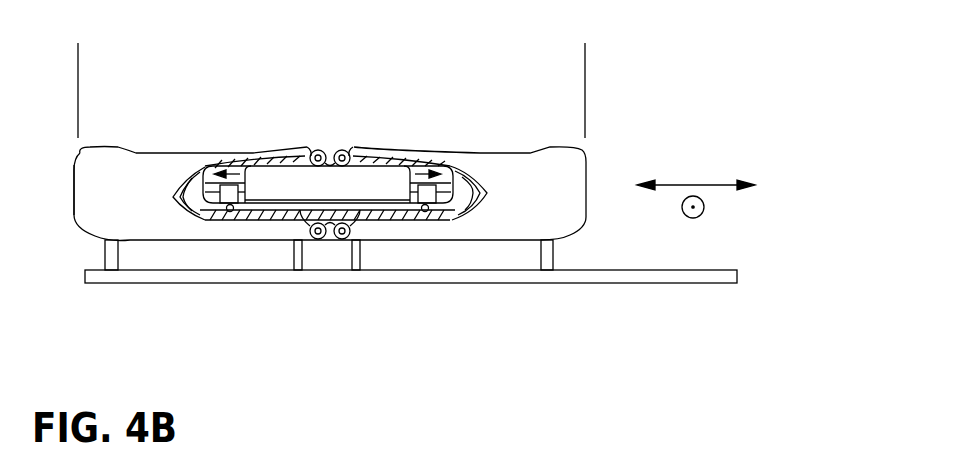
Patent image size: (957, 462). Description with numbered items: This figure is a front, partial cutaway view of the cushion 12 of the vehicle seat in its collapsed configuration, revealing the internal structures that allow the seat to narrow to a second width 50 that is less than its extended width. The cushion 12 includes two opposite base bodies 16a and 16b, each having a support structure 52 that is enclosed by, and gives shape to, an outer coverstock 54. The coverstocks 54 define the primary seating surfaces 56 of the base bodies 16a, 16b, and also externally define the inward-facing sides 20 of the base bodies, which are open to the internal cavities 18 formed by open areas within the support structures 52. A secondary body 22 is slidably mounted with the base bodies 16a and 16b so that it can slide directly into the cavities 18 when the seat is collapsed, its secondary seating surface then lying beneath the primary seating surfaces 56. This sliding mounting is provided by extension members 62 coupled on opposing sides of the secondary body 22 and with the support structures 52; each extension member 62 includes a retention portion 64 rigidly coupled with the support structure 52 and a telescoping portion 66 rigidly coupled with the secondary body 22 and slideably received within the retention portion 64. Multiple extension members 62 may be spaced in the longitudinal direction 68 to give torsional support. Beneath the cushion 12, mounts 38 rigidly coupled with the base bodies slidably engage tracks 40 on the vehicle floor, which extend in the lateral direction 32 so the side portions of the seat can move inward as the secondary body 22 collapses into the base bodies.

The cushion 12 is at (598, 222).
The base body 16a is at (568, 180).
The base body 16b is at (100, 192).
The internal cavity 18 is at (240, 172).
The side 20 is at (333, 152).
The secondary body 22 is at (362, 185).
The lateral direction 32 is at (683, 183).
The mounts 38 is at (113, 252).
The tracks 40 is at (113, 277).
The second width 50 is at (583, 53).
The support structure 52 is at (308, 152).
The outer coverstock 54 is at (185, 173).
The primary seating surfaces 56 is at (132, 148).
The extension members 62 is at (233, 205).
The retention portion 64 is at (231, 212).
The telescoping portion 66 is at (455, 180).
The longitudinal direction 68 is at (705, 207).